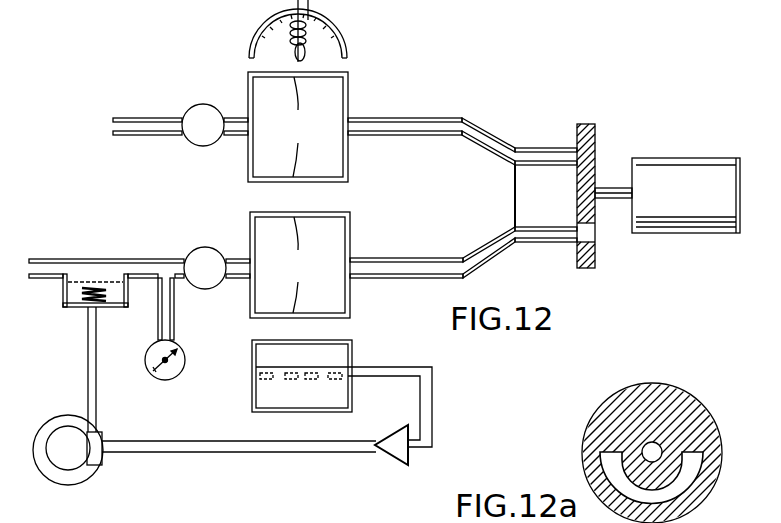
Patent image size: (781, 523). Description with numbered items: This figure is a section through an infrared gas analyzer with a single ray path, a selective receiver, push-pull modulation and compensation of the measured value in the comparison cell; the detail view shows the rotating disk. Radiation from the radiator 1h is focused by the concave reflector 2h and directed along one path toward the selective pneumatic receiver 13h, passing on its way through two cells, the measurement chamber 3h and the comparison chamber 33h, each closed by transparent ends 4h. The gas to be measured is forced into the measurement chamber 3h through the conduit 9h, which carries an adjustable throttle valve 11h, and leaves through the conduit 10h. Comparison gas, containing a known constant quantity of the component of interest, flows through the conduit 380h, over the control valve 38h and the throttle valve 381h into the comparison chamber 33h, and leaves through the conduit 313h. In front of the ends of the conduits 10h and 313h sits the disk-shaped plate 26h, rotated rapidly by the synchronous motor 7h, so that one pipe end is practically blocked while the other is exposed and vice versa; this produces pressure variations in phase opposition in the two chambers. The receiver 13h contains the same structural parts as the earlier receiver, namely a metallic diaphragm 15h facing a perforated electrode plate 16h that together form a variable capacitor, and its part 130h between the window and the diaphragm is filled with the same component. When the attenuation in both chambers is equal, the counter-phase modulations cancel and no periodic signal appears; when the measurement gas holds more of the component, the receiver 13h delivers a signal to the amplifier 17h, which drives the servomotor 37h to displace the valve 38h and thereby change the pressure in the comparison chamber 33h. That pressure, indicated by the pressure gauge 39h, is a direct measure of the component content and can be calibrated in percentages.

In FIG. 12, the radiator 1h is at (308, 36).
In FIG. 12, the concave reflector 2h is at (262, 31).
In FIG. 12, the measurement chamber 3h is at (341, 108).
In FIG. 12, the transparent ends 4h is at (327, 343).
In FIG. 12, the synchronous motor 7h is at (679, 163).
In FIG. 12, the conduit 9h is at (128, 119).
In FIG. 12, the conduit 10h is at (490, 141).
In FIG. 12, the adjustable throttle valve 11h is at (199, 104).
In FIG. 12, the selective pneumatic receiver 13h is at (333, 398).
In FIG. 12, the membrane 15h is at (290, 366).
In FIG. 12, the electrodes 16h is at (295, 380).
In FIG. 12, the amplifier 17h is at (381, 458).
In FIG. 12, the disk-shaped plate 26h is at (595, 137).
In FIG. 12A, the disk-shaped plate 26h is at (705, 424).
In FIG. 12, the comparison chamber 33h is at (340, 247).
In FIG. 12, the servomotor 37h is at (65, 478).
In FIG. 12, the control valve 38h is at (70, 292).
In FIG. 12, the pressure gauge 39h is at (171, 374).
In FIG. 12, the receiver part 130h is at (340, 356).
In FIG. 12, the conduit 313h is at (495, 256).
In FIG. 12, the conduit 380h is at (150, 260).
In FIG. 12, the throttle valve 381h is at (200, 247).